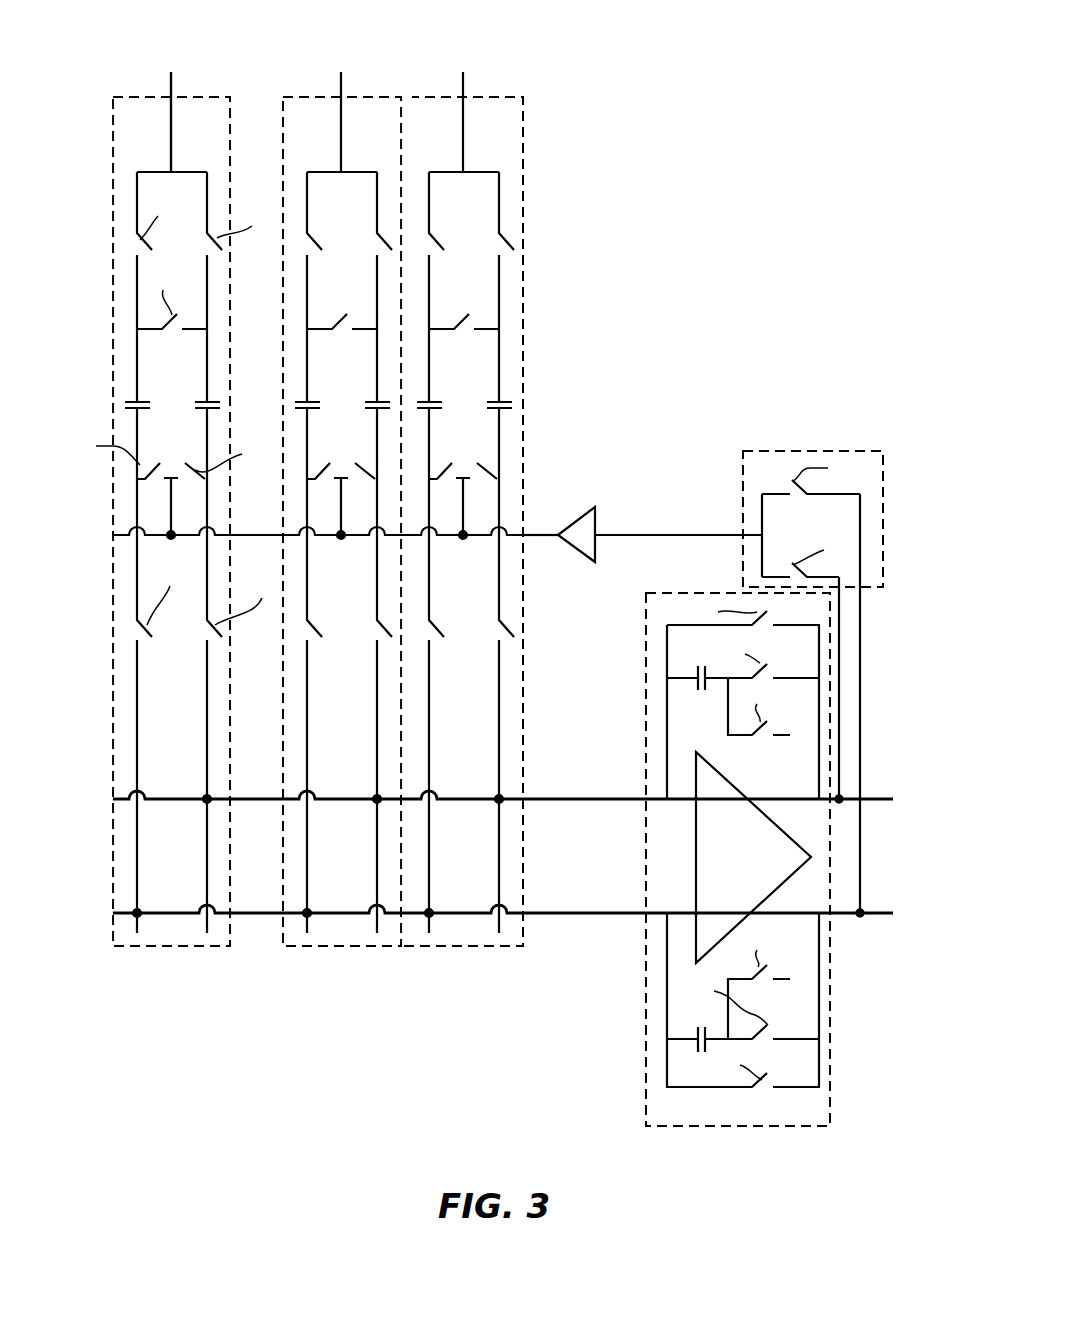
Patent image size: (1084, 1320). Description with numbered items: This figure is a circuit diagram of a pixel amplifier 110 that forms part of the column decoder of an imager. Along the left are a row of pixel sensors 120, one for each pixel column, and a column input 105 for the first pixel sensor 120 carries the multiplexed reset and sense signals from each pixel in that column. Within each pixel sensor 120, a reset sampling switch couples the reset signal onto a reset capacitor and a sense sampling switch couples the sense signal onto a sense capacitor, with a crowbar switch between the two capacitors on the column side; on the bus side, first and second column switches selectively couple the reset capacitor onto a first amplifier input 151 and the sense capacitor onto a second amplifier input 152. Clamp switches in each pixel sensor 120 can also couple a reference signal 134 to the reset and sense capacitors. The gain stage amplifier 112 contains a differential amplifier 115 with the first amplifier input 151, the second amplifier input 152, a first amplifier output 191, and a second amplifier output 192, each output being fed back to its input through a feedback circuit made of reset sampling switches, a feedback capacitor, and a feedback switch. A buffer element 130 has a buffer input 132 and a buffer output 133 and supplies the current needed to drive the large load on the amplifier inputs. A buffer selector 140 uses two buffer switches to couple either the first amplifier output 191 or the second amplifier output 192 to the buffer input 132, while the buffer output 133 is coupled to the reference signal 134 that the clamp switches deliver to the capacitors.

The pixel sensor 120 is at (145, 95).
The column input 105 is at (171, 78).
The pixel amplifier 110 is at (676, 334).
The buffer selector 140 is at (888, 458).
The reference signal 134 is at (534, 534).
The buffer output 133 is at (559, 540).
The buffer element 130 is at (575, 518).
The buffer input 132 is at (596, 537).
The first amplifier output 191 is at (860, 652).
The second amplifier output 192 is at (840, 699).
The second amplifier input 152 is at (568, 797).
The first amplifier input 151 is at (573, 916).
The gain stage amplifier 112 is at (646, 646).
The differential amplifier 115 is at (790, 841).